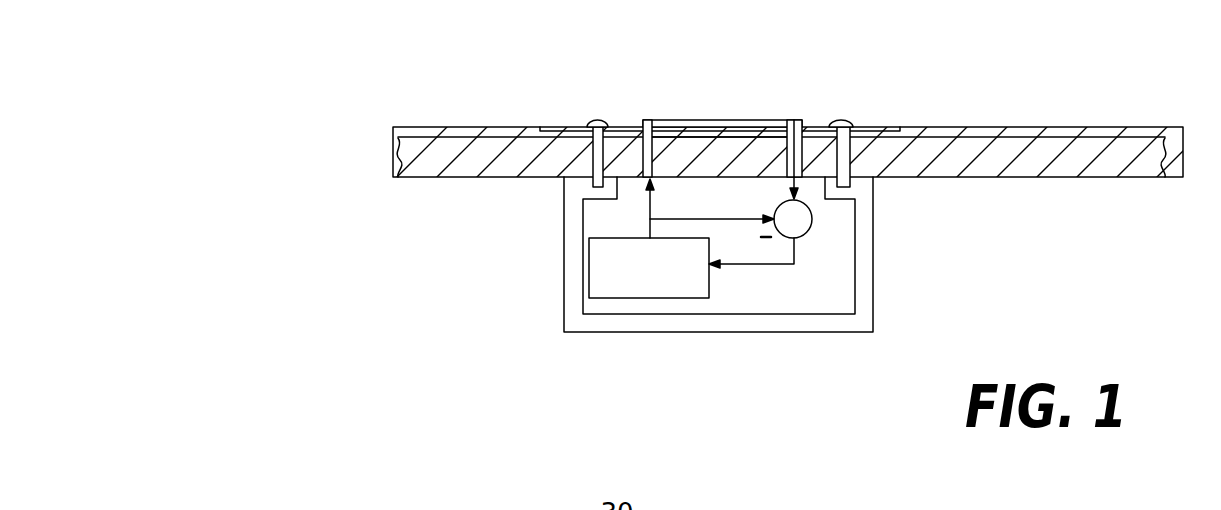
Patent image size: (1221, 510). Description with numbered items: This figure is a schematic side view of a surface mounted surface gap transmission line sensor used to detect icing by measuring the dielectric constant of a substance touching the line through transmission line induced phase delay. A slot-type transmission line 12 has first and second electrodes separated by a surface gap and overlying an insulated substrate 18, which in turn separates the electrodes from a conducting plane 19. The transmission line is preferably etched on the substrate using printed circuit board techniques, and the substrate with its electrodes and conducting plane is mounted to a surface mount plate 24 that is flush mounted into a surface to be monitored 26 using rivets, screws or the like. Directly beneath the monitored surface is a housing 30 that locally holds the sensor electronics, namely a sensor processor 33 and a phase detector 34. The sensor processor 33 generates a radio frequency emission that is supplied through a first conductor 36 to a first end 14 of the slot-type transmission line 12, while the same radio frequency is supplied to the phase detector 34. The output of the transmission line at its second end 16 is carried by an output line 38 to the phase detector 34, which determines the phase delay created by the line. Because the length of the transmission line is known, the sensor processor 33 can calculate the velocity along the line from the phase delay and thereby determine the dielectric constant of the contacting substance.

The slot-type transmission line 12 is at (730, 104).
The first end 14 is at (647, 120).
The second end 16 is at (794, 120).
The insulated substrate 18 is at (823, 121).
The conducting plane 19 is at (731, 138).
The surface mount plate 24 is at (887, 128).
The surface to be monitored 26 is at (1032, 127).
The housing 30 is at (875, 236).
The sensor processor 33 is at (630, 298).
The phase detector 34 is at (803, 237).
The first conductor 36 is at (637, 133).
The output line 38 is at (806, 128).